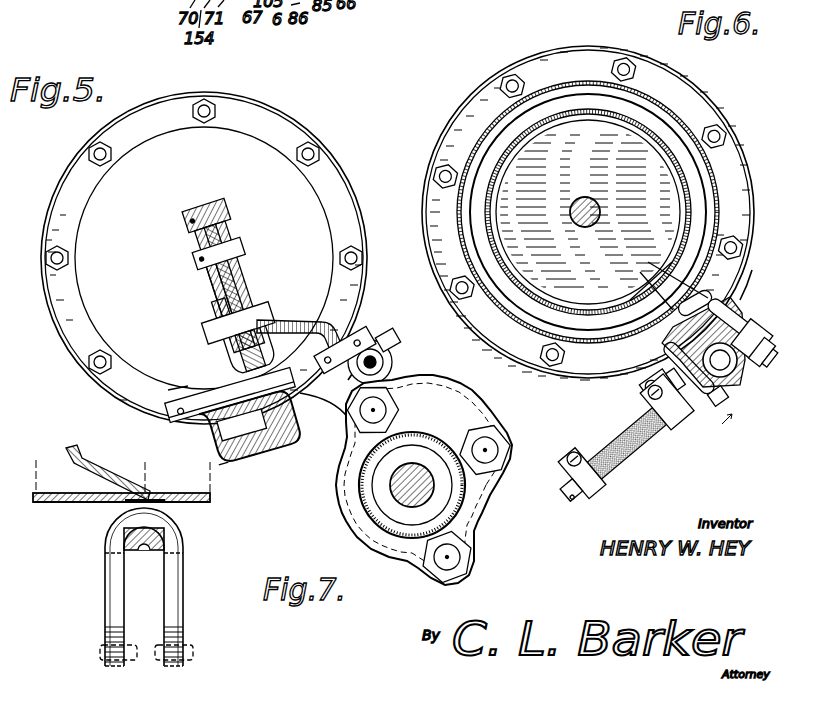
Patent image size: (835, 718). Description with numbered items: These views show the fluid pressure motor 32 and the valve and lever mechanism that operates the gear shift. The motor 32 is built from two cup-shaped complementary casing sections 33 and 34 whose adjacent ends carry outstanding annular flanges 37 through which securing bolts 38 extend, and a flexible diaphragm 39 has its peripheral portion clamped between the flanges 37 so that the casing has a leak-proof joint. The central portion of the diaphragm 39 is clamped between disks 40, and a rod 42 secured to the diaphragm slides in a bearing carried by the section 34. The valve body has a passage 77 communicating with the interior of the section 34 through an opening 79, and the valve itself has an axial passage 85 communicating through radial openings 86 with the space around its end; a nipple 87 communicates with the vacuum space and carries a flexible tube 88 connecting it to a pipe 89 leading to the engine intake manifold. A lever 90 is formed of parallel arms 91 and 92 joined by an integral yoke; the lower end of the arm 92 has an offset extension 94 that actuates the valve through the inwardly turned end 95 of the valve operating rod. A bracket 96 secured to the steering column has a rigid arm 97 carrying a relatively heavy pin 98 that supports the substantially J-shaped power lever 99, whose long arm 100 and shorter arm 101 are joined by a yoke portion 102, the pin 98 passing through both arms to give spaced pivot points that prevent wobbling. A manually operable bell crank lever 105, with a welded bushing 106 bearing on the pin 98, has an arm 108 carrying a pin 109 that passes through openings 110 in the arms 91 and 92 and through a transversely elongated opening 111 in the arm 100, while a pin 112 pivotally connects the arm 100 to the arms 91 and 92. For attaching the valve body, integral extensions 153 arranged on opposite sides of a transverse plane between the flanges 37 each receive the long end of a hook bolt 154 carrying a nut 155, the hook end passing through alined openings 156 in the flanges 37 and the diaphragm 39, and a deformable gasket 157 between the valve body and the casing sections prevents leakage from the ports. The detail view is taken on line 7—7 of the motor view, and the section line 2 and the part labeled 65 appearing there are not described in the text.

In FIG. 6, the section line 2 is at (645, 289).
In FIG. 6, the view direction arrow 7 is at (733, 432).
In FIG. 5, the motor 32 is at (344, 178).
In FIG. 6, the motor 32 is at (720, 90).
In FIG. 7, the complementary casing section 33 is at (40, 504).
In FIG. 5, the complementary casing section 34 is at (204, 258).
In FIG. 6, the complementary casing section 34 is at (655, 98).
In FIG. 7, the complementary casing section 34 is at (198, 495).
In FIG. 5, the annular flanges 37 is at (366, 208).
In FIG. 6, the annular flanges 37 is at (750, 180).
In FIG. 7, the annular flanges 37 is at (157, 552).
In FIG. 5, the securing bolts 38 is at (312, 150).
In FIG. 6, the securing bolts 38 is at (722, 140).
In FIG. 6, the flexible diaphragm 39 is at (683, 172).
In FIG. 7, the flexible diaphragm 39 is at (68, 450).
In FIG. 6, the disks 40 is at (599, 211).
In FIG. 6, the rod 42 is at (602, 216).
In FIG. 6, the nut 65 is at (769, 350).
In FIG. 6, the passage 77 is at (726, 308).
In FIG. 6, the opening 79 is at (648, 281).
In FIG. 6, the axial passage 85 is at (724, 368).
In FIG. 6, the radial openings 86 is at (736, 370).
In FIG. 6, the nipple 87 is at (692, 402).
In FIG. 6, the flexible tube 88 is at (620, 432).
In FIG. 6, the pipe 89 is at (562, 492).
In FIG. 5, the lever 90 is at (300, 326).
In FIG. 5, the lever arm 91 is at (214, 283).
In FIG. 5, the lever arm 92 is at (234, 258).
In FIG. 5, the offset extension 94 is at (332, 358).
In FIG. 5, the inwardly turned end 95 is at (374, 340).
In FIG. 5, the bracket 96 is at (456, 392).
In FIG. 5, the rigid arm 97 is at (327, 428).
In FIG. 5, the pin 98 is at (172, 428).
In FIG. 5, the power lever 99 is at (251, 450).
In FIG. 5, the long arm 100 is at (252, 268).
In FIG. 5, the shorter arm 101 is at (168, 390).
In FIG. 5, the yoke portion 102 is at (272, 438).
In FIG. 5, the bell crank lever 105 is at (223, 359).
In FIG. 5, the bushing 106 is at (233, 375).
In FIG. 5, the bell crank arm 108 is at (206, 311).
In FIG. 5, the pin 109 is at (216, 337).
In FIG. 5, the openings 110 is at (250, 290).
In FIG. 5, the elongated opening 111 is at (227, 296).
In FIG. 5, the pin 112 is at (232, 238).
In FIG. 5, the integral extensions 153 is at (392, 332).
In FIG. 6, the integral extensions 153 is at (758, 336).
In FIG. 6, the hook bolt 154 is at (728, 322).
In FIG. 7, the hook bolt 154 is at (105, 599).
In FIG. 7, the nuts 155 is at (100, 650).
In FIG. 7, the alined openings 156 is at (130, 504).
In FIG. 6, the packing member 157 is at (718, 301).